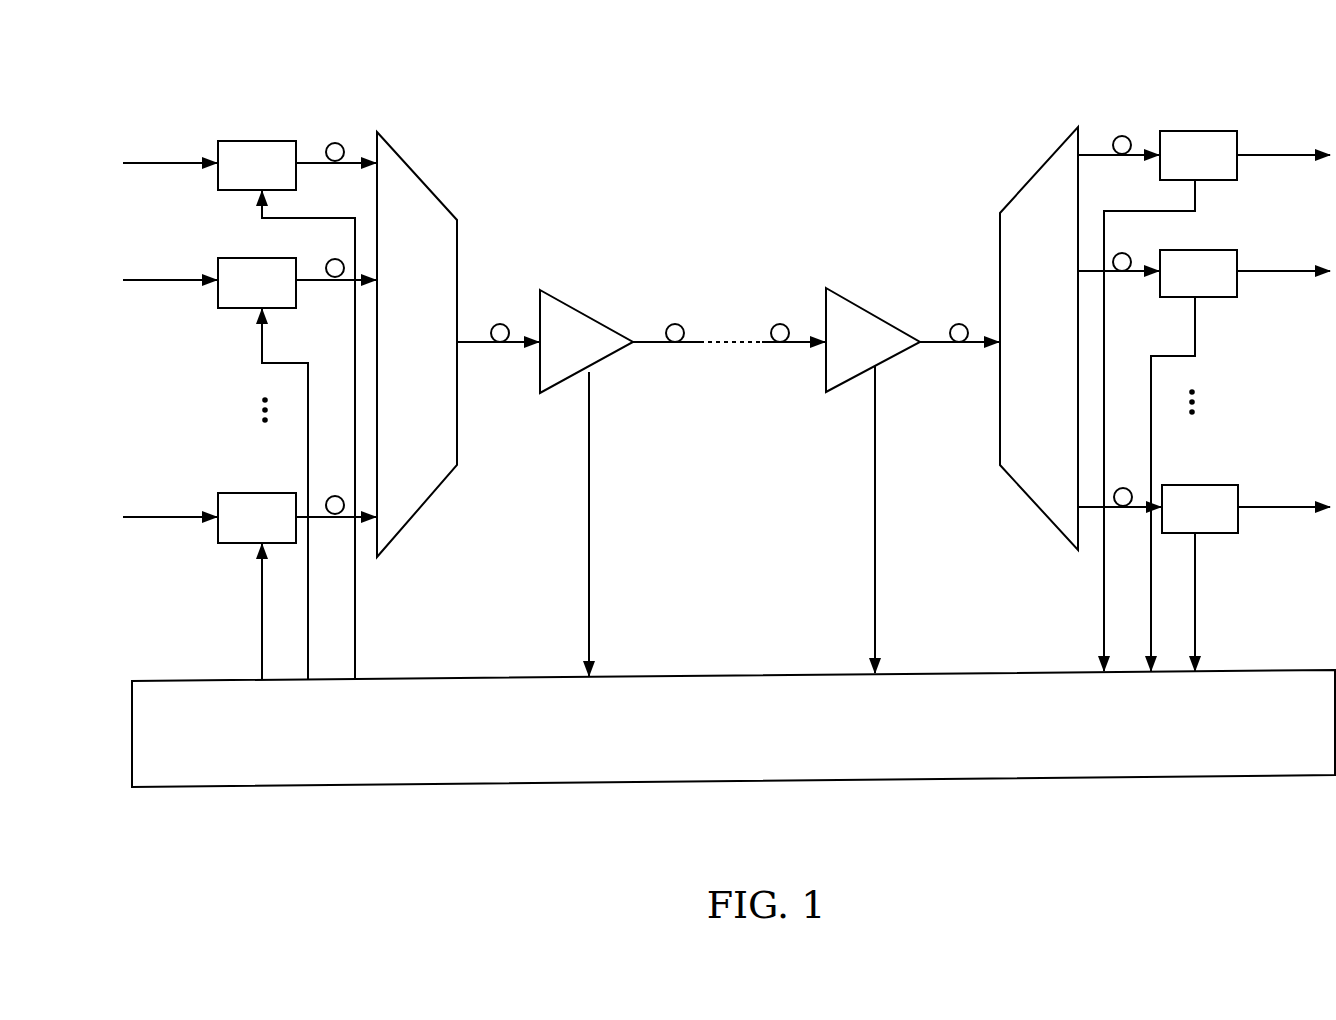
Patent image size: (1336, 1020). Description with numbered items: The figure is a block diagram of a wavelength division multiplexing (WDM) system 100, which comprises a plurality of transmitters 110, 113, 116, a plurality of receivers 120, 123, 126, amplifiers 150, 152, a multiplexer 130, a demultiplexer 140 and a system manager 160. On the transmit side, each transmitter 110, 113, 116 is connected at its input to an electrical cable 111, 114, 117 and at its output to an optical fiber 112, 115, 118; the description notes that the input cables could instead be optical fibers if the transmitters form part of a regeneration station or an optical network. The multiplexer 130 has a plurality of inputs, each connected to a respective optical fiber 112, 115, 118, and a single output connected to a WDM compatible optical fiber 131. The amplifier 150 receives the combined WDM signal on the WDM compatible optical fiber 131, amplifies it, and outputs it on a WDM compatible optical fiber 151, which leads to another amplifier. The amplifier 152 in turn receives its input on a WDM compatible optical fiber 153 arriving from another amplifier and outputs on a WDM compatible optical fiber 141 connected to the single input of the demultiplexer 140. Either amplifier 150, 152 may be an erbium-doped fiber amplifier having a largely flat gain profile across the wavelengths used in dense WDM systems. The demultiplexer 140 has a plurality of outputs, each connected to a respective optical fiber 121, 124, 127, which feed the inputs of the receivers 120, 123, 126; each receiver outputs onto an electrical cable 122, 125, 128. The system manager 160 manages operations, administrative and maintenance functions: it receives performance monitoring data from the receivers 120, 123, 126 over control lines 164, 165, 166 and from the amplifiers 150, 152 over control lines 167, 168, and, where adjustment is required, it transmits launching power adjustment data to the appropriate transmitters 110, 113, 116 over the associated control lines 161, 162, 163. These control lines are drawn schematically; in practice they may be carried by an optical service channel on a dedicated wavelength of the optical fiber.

The WDM system 100 is at (680, 86).
The transmitter 110 is at (225, 191).
The electrical cable 111 is at (150, 165).
The optical fiber 112 is at (318, 146).
The transmitter 113 is at (225, 309).
The electrical cable 114 is at (150, 282).
The optical fiber 115 is at (316, 282).
The transmitter 116 is at (225, 544).
The electrical cable 117 is at (150, 519).
The optical fiber 118 is at (316, 519).
The receiver 120 is at (1213, 181).
The optical fiber 121 is at (1137, 150).
The electrical cable 122 is at (1283, 158).
The receiver 123 is at (1213, 298).
The optical fiber 124 is at (1130, 273).
The electrical cable 125 is at (1283, 273).
The receiver 126 is at (1215, 534).
The optical fiber 127 is at (1123, 508).
The electrical cable 128 is at (1285, 509).
The multiplexer 130 is at (435, 490).
The WDM compatible optical fiber 131 is at (478, 344).
The demultiplexer 140 is at (1017, 488).
The WDM compatible optical fiber 141 is at (930, 344).
The amplifier 150 is at (560, 393).
The WDM compatible optical fiber 151 is at (672, 344).
The amplifier 152 is at (836, 393).
The WDM compatible optical fiber 153 is at (780, 344).
The system manager 160 is at (520, 783).
The control line 161 is at (357, 592).
The control line 162 is at (310, 640).
The control line 163 is at (263, 630).
The control line 164 is at (1102, 585).
The control line 165 is at (1147, 632).
The control line 166 is at (1197, 620).
The control line 167 is at (590, 462).
The control line 168 is at (876, 460).